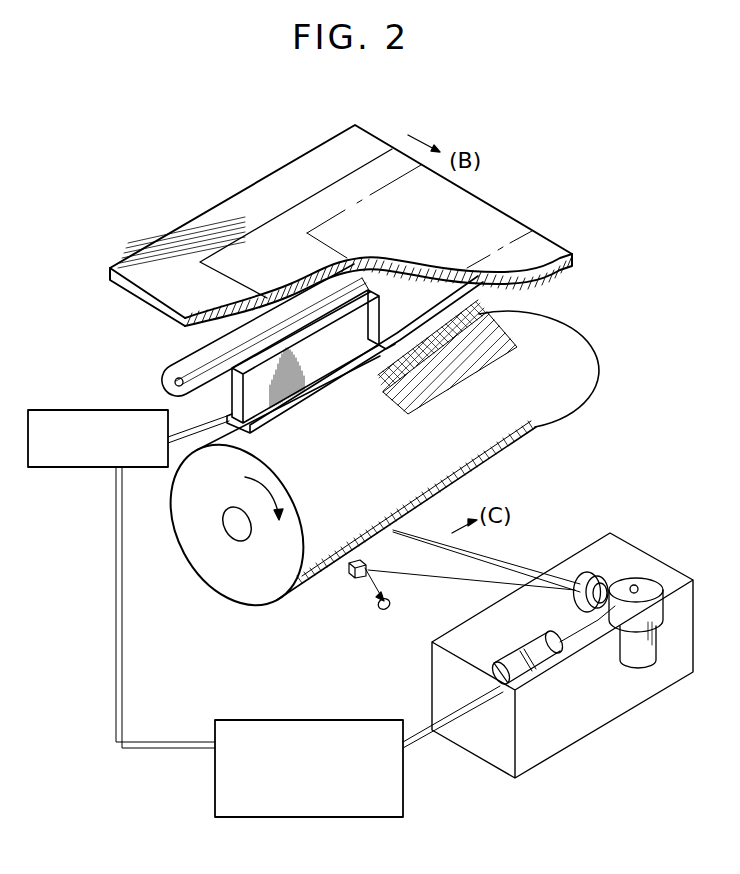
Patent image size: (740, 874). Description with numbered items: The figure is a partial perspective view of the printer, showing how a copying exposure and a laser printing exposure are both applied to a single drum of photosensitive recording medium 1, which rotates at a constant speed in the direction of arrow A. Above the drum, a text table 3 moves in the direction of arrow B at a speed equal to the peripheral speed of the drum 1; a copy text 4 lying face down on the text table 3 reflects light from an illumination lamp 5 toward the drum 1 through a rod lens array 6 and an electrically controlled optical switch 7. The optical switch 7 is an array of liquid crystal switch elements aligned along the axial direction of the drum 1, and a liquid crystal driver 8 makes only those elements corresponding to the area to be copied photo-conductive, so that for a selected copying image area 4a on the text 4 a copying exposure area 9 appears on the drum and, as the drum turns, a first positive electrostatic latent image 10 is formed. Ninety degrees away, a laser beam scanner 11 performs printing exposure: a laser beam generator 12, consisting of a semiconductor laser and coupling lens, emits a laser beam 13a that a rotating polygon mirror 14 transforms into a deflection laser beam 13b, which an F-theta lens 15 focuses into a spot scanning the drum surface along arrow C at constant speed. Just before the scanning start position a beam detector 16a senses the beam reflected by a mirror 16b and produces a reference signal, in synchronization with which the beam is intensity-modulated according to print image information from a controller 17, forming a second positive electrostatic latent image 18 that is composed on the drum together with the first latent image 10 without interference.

The drum of photosensitive recording medium 1 is at (198, 587).
The text table 3 is at (248, 186).
The copy text 4 is at (213, 252).
The copying image area 4a is at (493, 220).
The illumination lamp 5 is at (175, 367).
The rod lens array 6 is at (315, 365).
The electrically controlled optical switch 7 is at (287, 407).
The liquid crystal driver 8 is at (112, 410).
The copying exposure area 9 is at (488, 324).
The first positive electrostatic latent image 10 is at (497, 347).
The laser beam scanner 11 is at (691, 673).
The laser beam generator 12 is at (532, 668).
The laser beam 13a is at (592, 652).
The deflection laser beam 13b is at (455, 550).
The rotating polygon mirror 14 is at (658, 578).
The F-theta lens 15 is at (597, 570).
The beam detector 16a is at (386, 610).
The mirror 16b is at (352, 578).
The controller 17 is at (407, 808).
The second positive electrostatic latent image 18 is at (316, 578).